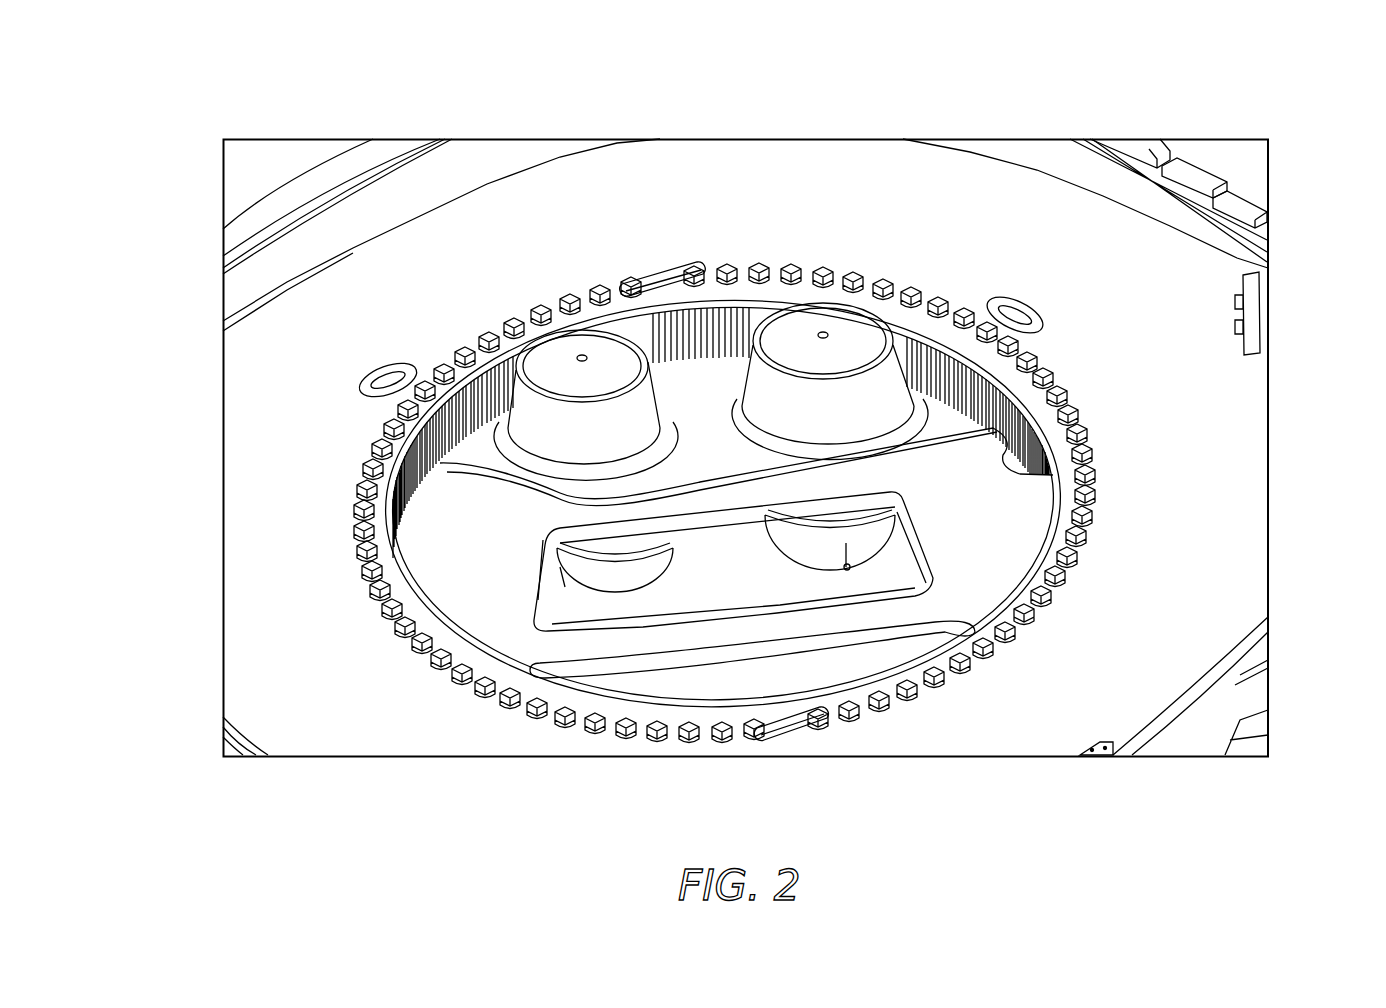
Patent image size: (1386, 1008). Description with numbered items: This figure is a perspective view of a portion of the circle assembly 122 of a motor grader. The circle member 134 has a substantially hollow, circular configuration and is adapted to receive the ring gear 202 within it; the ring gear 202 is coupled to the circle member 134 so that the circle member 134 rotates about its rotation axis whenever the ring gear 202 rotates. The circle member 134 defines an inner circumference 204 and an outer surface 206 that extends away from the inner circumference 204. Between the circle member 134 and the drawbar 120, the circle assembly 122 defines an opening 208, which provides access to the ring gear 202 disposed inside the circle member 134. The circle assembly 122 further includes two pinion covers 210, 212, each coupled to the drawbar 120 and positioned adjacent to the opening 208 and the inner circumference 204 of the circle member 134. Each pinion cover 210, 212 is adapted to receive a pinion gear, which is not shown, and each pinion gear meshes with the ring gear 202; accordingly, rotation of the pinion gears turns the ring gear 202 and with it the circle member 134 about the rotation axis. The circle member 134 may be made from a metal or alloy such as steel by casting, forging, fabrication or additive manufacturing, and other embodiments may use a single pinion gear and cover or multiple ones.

The drawbar 120 is at (983, 572).
The circle assembly 122 is at (1155, 122).
The circle member 134 is at (1213, 403).
The ring gear 202 is at (1062, 468).
The inner circumference 204 is at (445, 607).
The outer surface 206 is at (953, 218).
The opening 208 is at (712, 392).
The pinion cover 210 is at (843, 348).
The pinion cover 212 is at (588, 347).